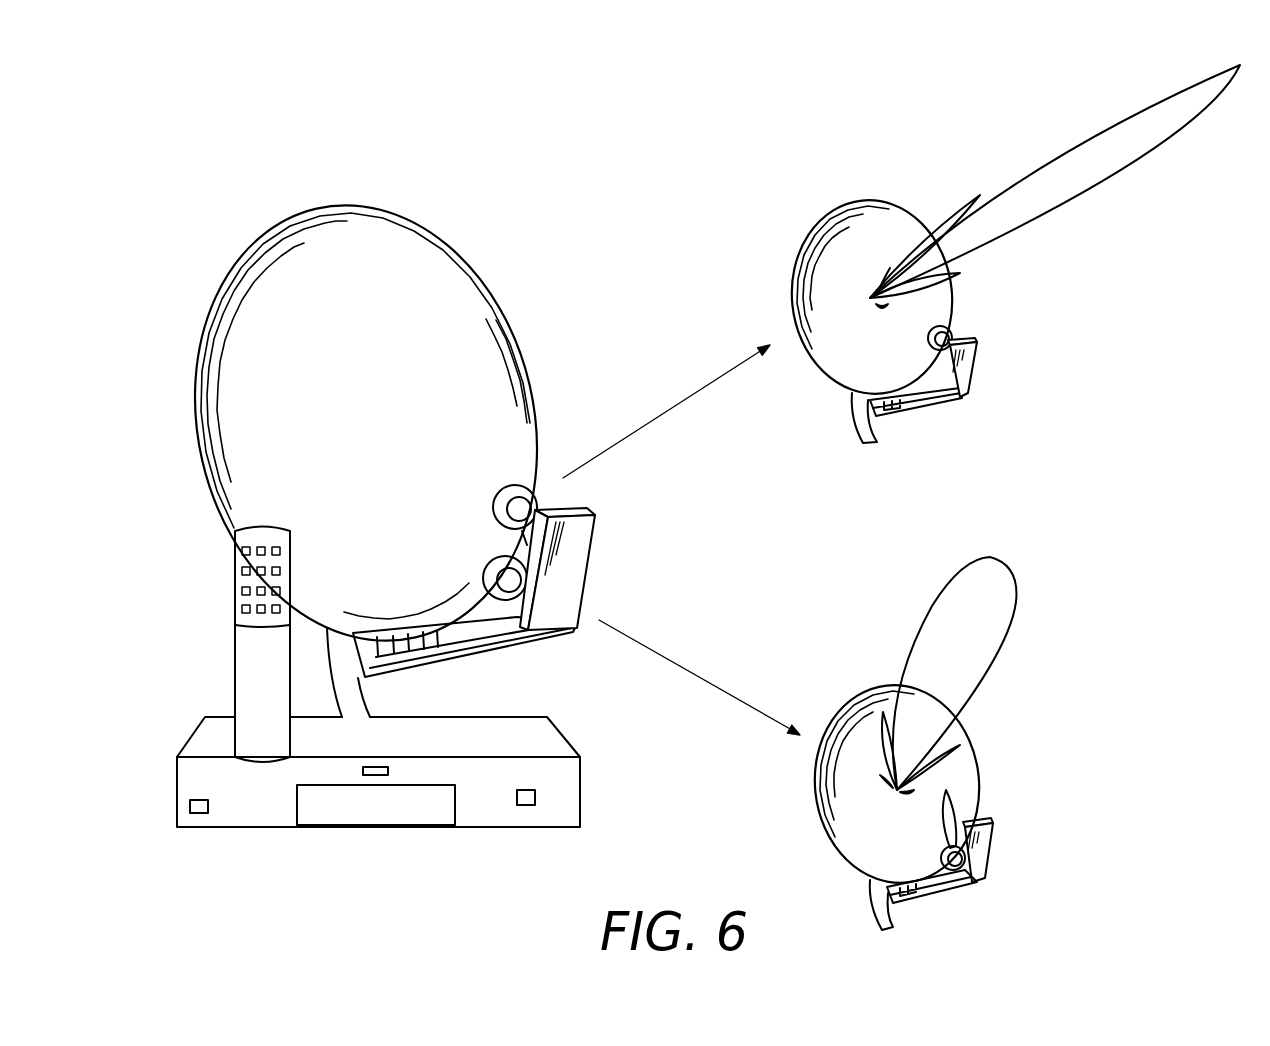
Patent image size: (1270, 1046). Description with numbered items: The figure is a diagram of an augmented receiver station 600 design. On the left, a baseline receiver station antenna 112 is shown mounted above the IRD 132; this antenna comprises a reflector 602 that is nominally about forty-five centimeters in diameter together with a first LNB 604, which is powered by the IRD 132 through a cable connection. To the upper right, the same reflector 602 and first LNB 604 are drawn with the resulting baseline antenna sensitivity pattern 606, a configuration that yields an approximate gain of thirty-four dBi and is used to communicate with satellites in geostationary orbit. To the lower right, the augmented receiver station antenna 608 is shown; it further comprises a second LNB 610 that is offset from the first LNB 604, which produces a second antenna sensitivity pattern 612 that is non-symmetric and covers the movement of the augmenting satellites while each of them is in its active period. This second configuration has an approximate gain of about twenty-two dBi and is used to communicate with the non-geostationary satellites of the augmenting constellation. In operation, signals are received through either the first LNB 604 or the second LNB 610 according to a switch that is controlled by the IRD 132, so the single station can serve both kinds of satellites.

The augmented receiver station 600 is at (505, 236).
The reflector 602 is at (815, 219).
The first LNB 604 is at (953, 328).
The baseline antenna sensitivity pattern 606 is at (517, 483).
The augmented receiver station antenna 608 is at (836, 658).
The second LNB 610 is at (495, 550).
The second antenna sensitivity pattern 612 is at (1009, 630).
The baseline receiver station antenna 112 is at (932, 166).
The IRD 132 is at (583, 795).